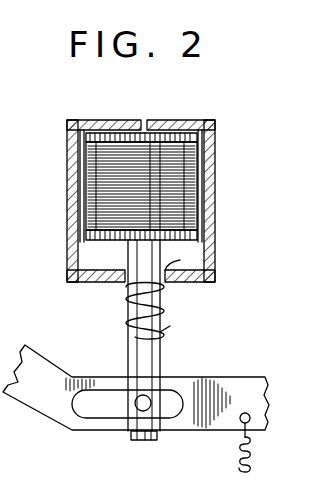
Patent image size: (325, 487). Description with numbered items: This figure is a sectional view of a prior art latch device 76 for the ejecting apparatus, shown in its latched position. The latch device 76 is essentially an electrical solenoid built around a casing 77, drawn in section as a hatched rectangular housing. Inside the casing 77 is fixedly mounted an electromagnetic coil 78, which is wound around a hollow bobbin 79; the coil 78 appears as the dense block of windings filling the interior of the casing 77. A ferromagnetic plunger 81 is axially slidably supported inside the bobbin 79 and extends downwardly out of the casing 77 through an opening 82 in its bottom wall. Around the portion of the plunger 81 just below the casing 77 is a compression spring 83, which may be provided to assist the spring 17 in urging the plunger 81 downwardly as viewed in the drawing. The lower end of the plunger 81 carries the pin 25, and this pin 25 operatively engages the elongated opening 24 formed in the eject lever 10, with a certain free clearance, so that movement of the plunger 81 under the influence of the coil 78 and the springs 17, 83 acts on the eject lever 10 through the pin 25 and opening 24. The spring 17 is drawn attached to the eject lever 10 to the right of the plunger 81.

The eject lever 10 is at (238, 377).
The spring 17 is at (252, 452).
The elongated opening 24 is at (105, 418).
The pin 25 is at (156, 412).
The latch device 76 is at (214, 121).
The casing 77 is at (119, 201).
The electromagnetic coil 78 is at (203, 163).
The hollow bobbin 79 is at (190, 121).
The ferromagnetic plunger 81 is at (70, 174).
The opening 82 is at (185, 260).
The compression spring 83 is at (128, 302).